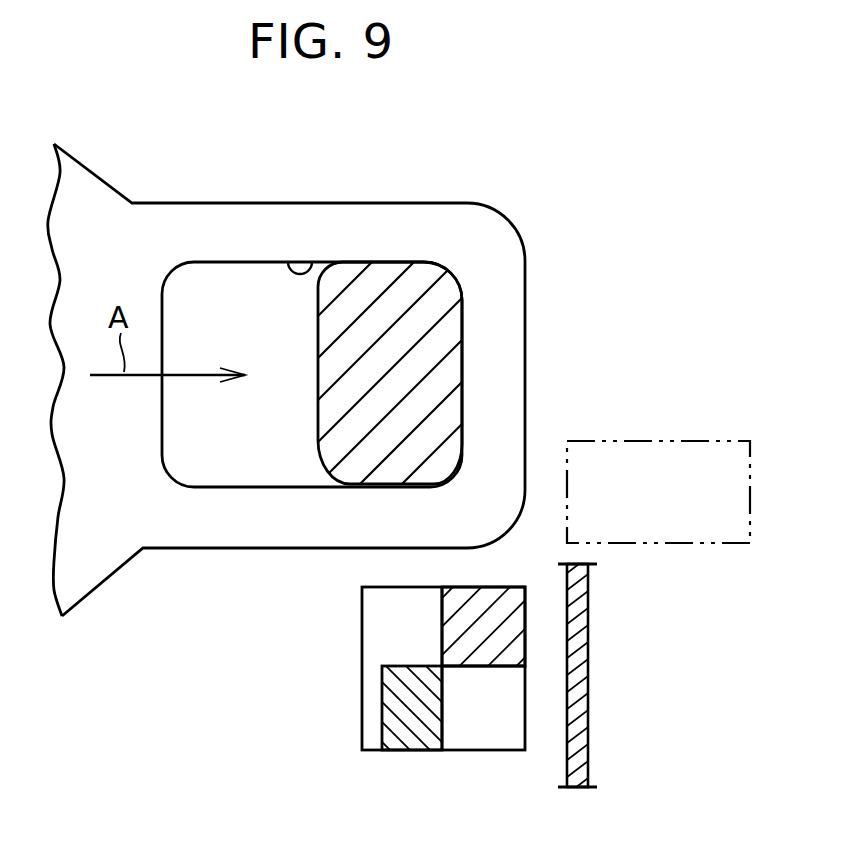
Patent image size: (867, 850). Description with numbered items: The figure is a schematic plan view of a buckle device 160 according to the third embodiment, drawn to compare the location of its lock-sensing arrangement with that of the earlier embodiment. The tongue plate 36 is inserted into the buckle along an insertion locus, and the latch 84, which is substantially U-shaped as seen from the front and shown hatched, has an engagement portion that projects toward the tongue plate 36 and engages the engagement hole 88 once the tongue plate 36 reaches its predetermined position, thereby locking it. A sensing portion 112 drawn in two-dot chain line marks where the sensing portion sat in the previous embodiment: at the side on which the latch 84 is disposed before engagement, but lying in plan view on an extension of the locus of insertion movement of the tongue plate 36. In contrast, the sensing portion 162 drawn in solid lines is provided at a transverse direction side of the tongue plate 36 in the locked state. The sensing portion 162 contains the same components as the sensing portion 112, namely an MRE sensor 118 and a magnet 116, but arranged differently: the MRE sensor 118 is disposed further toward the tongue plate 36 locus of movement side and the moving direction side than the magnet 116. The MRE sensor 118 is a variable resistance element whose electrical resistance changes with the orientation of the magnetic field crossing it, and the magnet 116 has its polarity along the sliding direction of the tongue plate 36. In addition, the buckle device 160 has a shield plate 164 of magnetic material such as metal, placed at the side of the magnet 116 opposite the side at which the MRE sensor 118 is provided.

The tongue plate 36 is at (390, 202).
The engagement hole 88 is at (317, 266).
The latch 84 is at (440, 375).
The buckle device 160 is at (632, 224).
The sensing portion 112 is at (658, 543).
The shield plate 164 is at (592, 677).
The sensing portion 162 is at (356, 655).
The MRE sensor 118 is at (442, 617).
The magnet 116 is at (382, 721).